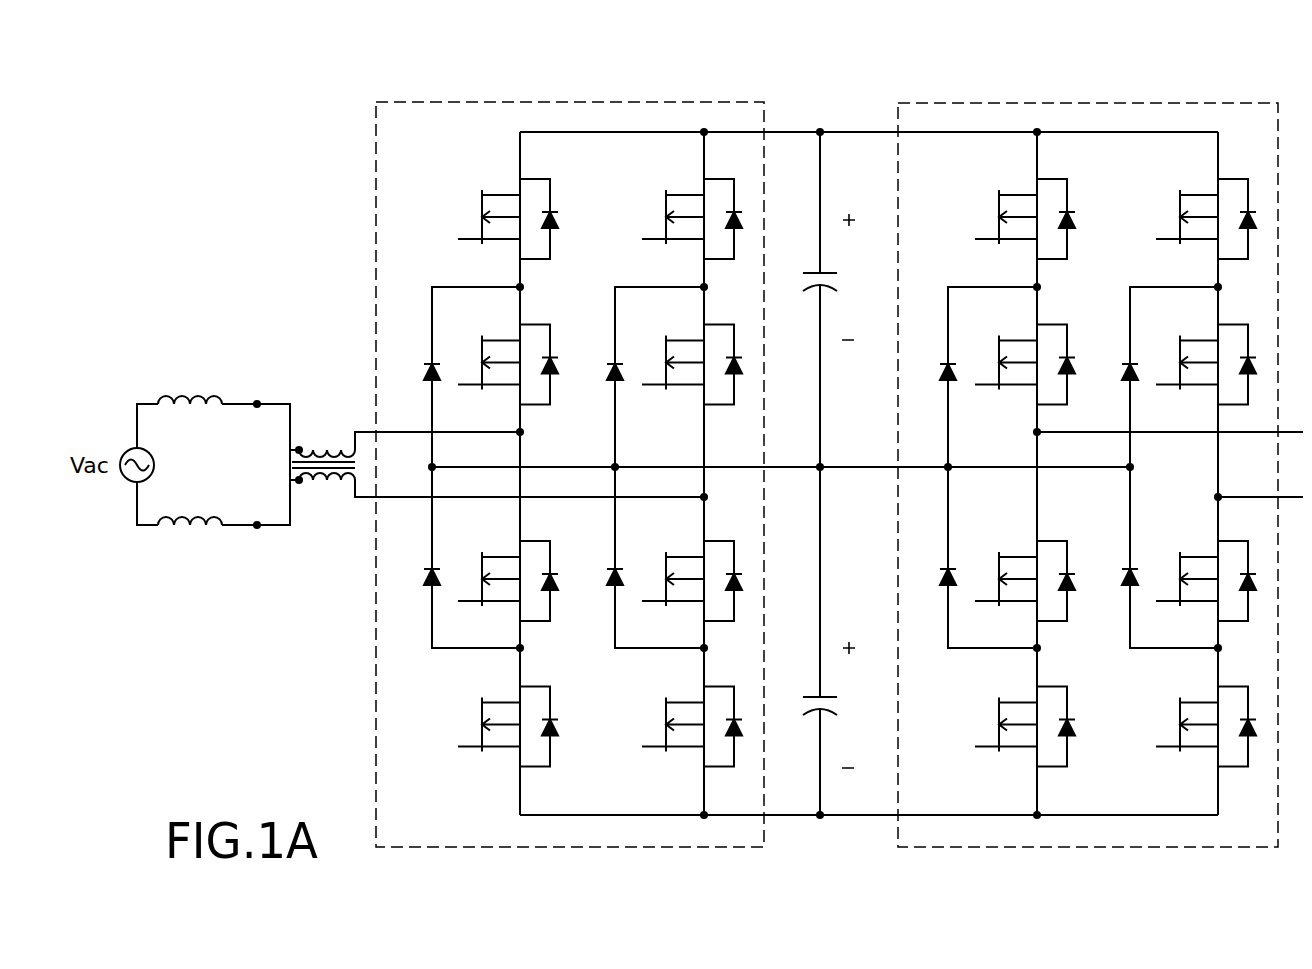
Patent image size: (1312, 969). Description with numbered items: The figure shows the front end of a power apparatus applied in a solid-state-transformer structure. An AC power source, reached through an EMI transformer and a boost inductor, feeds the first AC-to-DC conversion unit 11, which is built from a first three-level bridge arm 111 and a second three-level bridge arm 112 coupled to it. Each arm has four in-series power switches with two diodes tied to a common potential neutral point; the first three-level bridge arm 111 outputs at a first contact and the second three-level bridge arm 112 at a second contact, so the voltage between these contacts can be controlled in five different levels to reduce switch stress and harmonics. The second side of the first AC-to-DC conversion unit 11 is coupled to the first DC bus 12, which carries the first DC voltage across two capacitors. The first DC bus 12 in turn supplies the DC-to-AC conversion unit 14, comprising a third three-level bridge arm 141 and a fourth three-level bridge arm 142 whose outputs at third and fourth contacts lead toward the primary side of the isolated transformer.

The first AC-to-DC conversion unit 11 is at (388, 146).
The first three-level bridge arm 111 is at (477, 143).
The second three-level bridge arm 112 is at (685, 143).
The first DC bus 12 is at (810, 163).
The DC-to-AC conversion unit 14 is at (1252, 123).
The third three-level bridge arm 141 is at (1014, 145).
The fourth three-level bridge arm 142 is at (1185, 145).